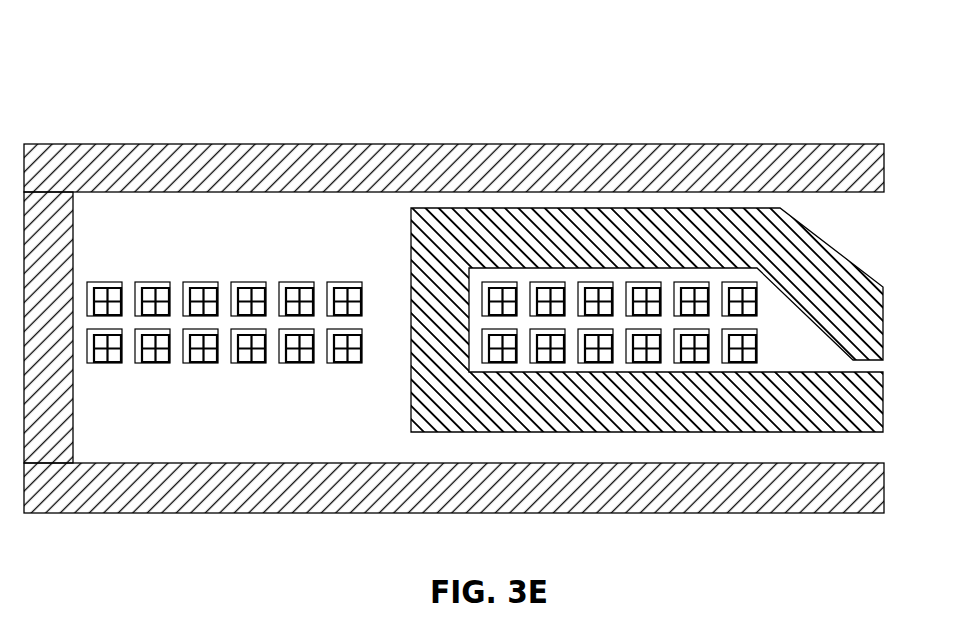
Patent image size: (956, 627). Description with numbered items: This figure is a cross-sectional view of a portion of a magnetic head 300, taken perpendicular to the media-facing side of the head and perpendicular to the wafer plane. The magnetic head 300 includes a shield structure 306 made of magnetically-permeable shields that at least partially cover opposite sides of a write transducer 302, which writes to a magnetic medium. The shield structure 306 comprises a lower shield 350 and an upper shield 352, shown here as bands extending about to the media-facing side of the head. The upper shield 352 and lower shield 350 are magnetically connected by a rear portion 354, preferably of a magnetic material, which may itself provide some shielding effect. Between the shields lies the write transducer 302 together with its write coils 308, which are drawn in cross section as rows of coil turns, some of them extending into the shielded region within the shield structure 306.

The magnetic head 300 is at (235, 52).
The write transducer 302 is at (870, 290).
The shield structure 306 is at (548, 144).
The write coils 308 is at (201, 365).
The lower shield 350 is at (731, 497).
The upper shield 352 is at (736, 170).
The rear portion 354 is at (73, 243).